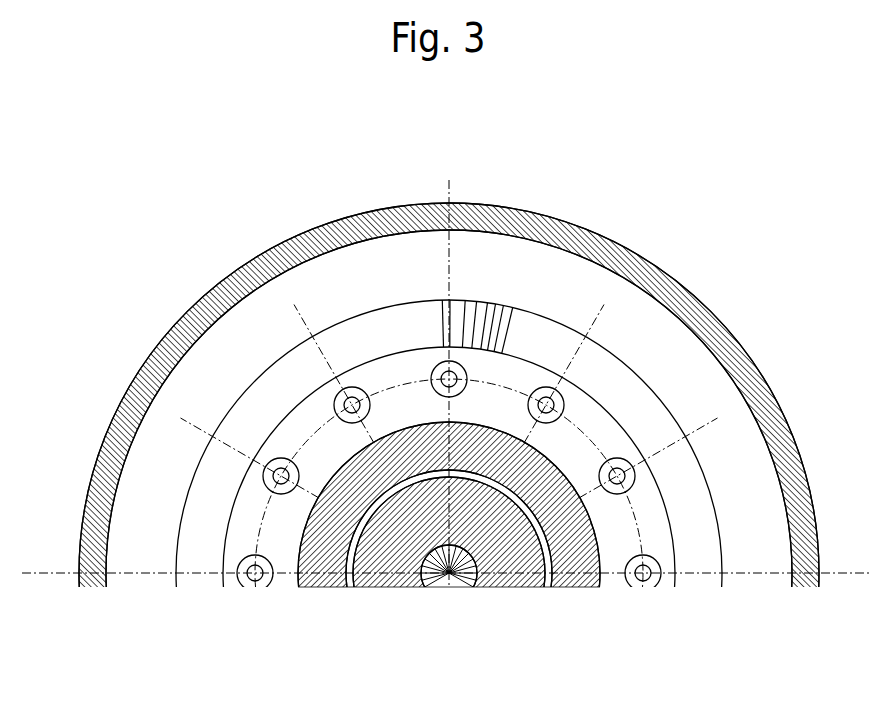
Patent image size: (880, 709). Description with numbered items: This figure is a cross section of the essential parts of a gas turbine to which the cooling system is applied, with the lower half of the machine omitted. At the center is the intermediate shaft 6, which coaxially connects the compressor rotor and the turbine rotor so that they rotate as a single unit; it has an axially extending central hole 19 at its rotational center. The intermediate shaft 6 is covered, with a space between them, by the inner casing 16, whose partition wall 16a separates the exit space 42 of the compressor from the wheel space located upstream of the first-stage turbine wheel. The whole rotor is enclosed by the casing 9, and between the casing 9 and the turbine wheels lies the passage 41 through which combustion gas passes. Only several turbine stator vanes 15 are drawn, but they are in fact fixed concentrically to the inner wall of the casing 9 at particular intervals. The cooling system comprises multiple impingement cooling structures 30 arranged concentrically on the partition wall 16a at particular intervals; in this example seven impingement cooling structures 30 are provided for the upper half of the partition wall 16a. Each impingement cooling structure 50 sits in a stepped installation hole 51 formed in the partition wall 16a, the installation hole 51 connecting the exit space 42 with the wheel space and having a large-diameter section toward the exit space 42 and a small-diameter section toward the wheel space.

The casing 9 is at (235, 272).
The exit space 42 is at (368, 272).
The passage 41 is at (160, 350).
The turbine stator vanes 15 is at (460, 305).
The impingement cooling structure 50 is at (398, 480).
The impingement cooling structures 30 is at (266, 484).
The stepped installation hole 51 is at (272, 476).
The inner casing 16 is at (597, 542).
The partition wall 16a is at (607, 438).
The central hole 19 is at (433, 588).
The intermediate shaft 6 is at (403, 587).